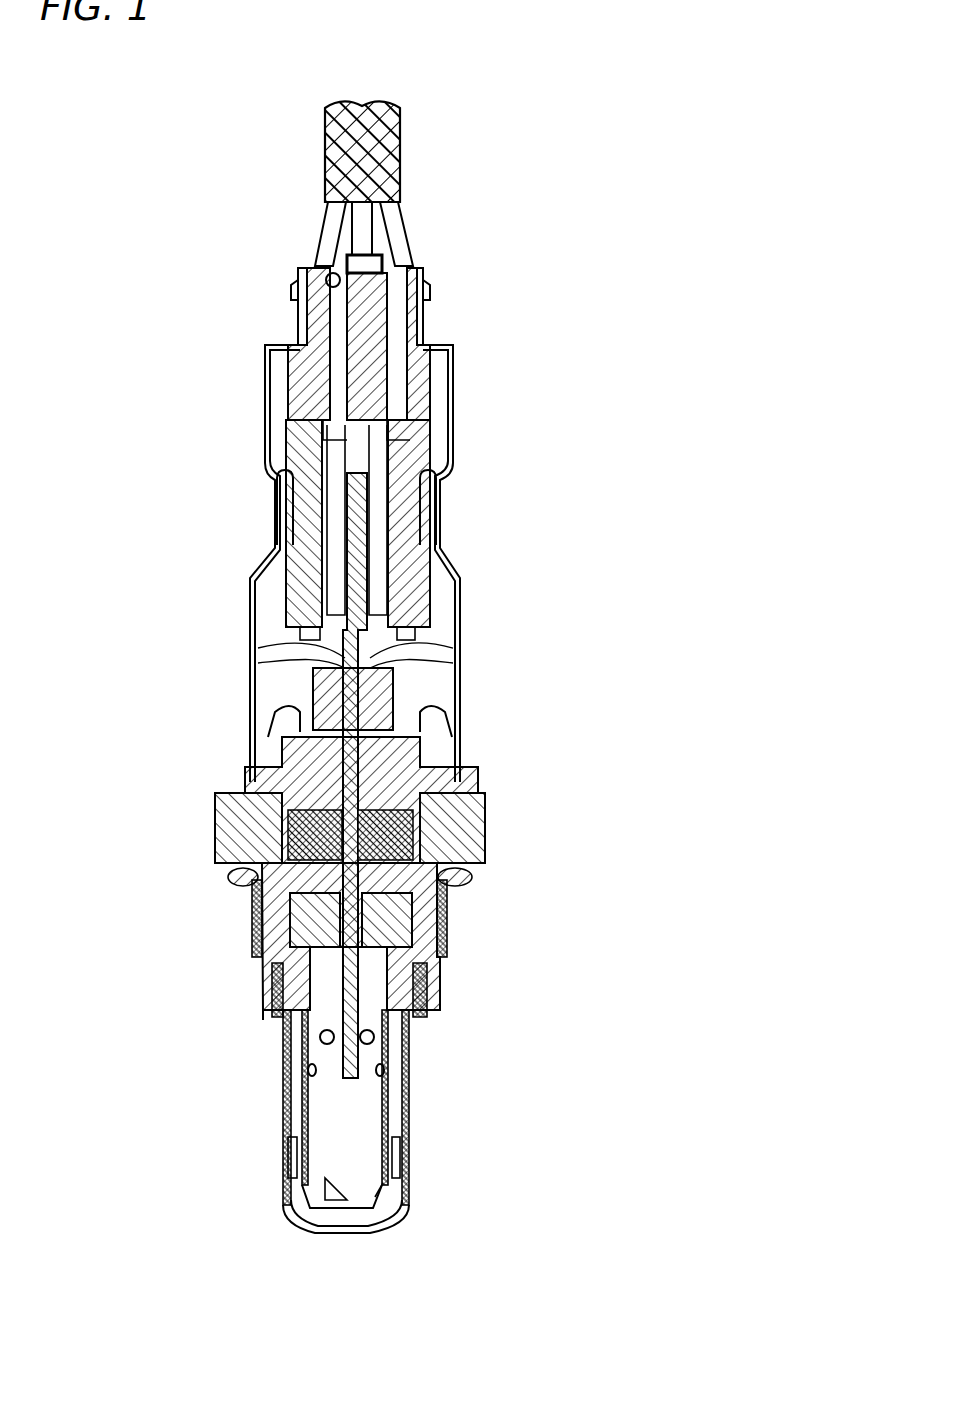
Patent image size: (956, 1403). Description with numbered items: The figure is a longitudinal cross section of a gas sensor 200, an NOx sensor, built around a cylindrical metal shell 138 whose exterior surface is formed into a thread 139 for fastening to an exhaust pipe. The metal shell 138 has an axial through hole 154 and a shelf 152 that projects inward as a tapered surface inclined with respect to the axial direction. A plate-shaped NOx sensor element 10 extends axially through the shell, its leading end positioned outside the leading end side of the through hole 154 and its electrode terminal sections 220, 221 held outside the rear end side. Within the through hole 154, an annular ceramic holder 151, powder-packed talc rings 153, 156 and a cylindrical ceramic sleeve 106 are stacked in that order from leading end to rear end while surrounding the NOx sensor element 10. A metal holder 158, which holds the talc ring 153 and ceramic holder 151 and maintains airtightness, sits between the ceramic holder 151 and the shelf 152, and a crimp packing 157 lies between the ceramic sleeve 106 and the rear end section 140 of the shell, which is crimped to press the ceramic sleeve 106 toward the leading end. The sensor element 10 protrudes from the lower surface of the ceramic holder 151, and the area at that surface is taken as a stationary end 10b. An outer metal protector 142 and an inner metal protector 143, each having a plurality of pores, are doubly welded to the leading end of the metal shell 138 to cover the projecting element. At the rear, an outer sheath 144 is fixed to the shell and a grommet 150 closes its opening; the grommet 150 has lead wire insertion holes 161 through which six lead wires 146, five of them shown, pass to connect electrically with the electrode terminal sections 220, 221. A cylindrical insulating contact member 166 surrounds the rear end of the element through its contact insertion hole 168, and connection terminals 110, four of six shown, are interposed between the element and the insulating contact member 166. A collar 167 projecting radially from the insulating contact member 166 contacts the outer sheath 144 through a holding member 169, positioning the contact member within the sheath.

The gas sensor 200 is at (522, 158).
The lead wire 146 is at (343, 247).
The lead wire insertion hole 161 is at (326, 278).
The grommet 150 is at (300, 345).
The contact insertion hole 168 is at (352, 433).
The collar 167 is at (413, 432).
The connection terminal 110 is at (293, 487).
The holding member 169 is at (283, 568).
The insulating contact member 166 is at (320, 598).
The NOx sensor element 10 is at (330, 1078).
The electrode terminal section 220 is at (330, 655).
The electrode terminal section 221 is at (430, 652).
The ceramic sleeve 106 is at (325, 688).
The outer sheath 144 is at (460, 663).
The rear end section 140 is at (447, 712).
The crimp packing 157 is at (455, 742).
The metal shell 138 is at (235, 818).
The powder-packed layer 156 is at (420, 825).
The powder-packed layer 153 is at (440, 843).
The thread 139 is at (252, 912).
The ceramic holder 151 is at (440, 929).
The shelf 152 is at (298, 958).
The metal holder 158 is at (443, 960).
The stationary end 10b is at (285, 1012).
The through hole 154 is at (374, 997).
The outer metal protector 142 is at (414, 1103).
The inner metal protector 143 is at (372, 1236).